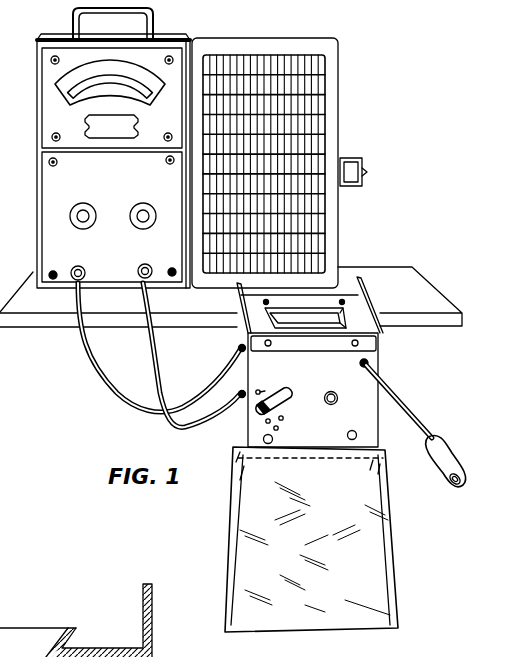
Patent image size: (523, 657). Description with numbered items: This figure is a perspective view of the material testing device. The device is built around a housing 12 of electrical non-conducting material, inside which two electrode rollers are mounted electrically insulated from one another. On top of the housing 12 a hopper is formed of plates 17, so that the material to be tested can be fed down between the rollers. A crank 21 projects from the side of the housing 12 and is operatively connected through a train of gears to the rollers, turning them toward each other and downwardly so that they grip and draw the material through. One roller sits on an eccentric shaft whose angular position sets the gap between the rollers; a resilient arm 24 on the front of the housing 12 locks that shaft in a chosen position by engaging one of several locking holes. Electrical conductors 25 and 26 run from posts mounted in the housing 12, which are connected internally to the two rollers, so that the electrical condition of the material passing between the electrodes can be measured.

The housing 12 is at (378, 364).
The plates 17 is at (301, 316).
The crank 21 is at (410, 408).
The resilient arm 24 is at (272, 394).
The electrical conductor 25 is at (207, 388).
The electrical conductor 26 is at (180, 421).